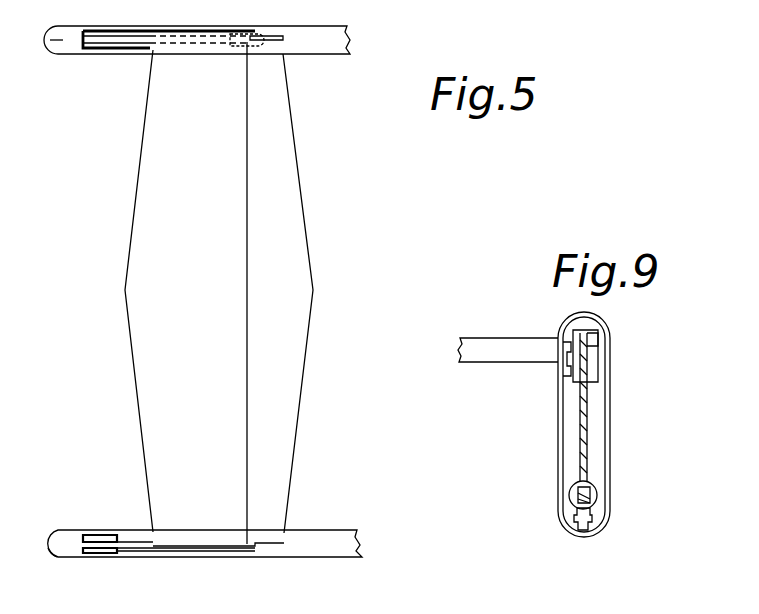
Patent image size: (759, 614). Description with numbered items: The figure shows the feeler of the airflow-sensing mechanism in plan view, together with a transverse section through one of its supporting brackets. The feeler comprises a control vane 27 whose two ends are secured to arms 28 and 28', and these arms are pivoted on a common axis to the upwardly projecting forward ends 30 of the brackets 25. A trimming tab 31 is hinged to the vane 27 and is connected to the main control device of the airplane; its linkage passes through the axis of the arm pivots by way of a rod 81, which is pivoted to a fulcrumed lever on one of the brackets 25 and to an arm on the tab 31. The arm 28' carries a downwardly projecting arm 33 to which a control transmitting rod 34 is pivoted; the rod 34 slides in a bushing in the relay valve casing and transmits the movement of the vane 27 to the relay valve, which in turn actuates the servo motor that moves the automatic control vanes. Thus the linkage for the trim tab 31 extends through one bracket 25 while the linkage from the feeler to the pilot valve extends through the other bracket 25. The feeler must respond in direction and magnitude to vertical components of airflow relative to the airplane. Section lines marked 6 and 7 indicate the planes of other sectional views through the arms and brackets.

In FIG. 5, the section line 6- 6 is at (34, 46).
In FIG. 5, the section line 7- 7 is at (72, 545).
In FIG. 5, the brackets 25 is at (181, 550).
In FIG. 5, the control vane 27 is at (122, 290).
In FIG. 9, the control vane 27 is at (490, 358).
In FIG. 5, the arm 28 is at (183, 65).
In FIG. 5, the arm 28' is at (96, 566).
In FIG. 9, the arm 28' is at (606, 350).
In FIG. 5, the upwardly projecting forward ends 30 is at (55, 558).
In FIG. 5, the trimming tab 31 is at (314, 288).
In FIG. 9, the downwardly projecting arm 33 is at (588, 436).
In FIG. 9, the control transmitting rod 34 is at (591, 498).
In FIG. 5, the rod 81 is at (214, 46).